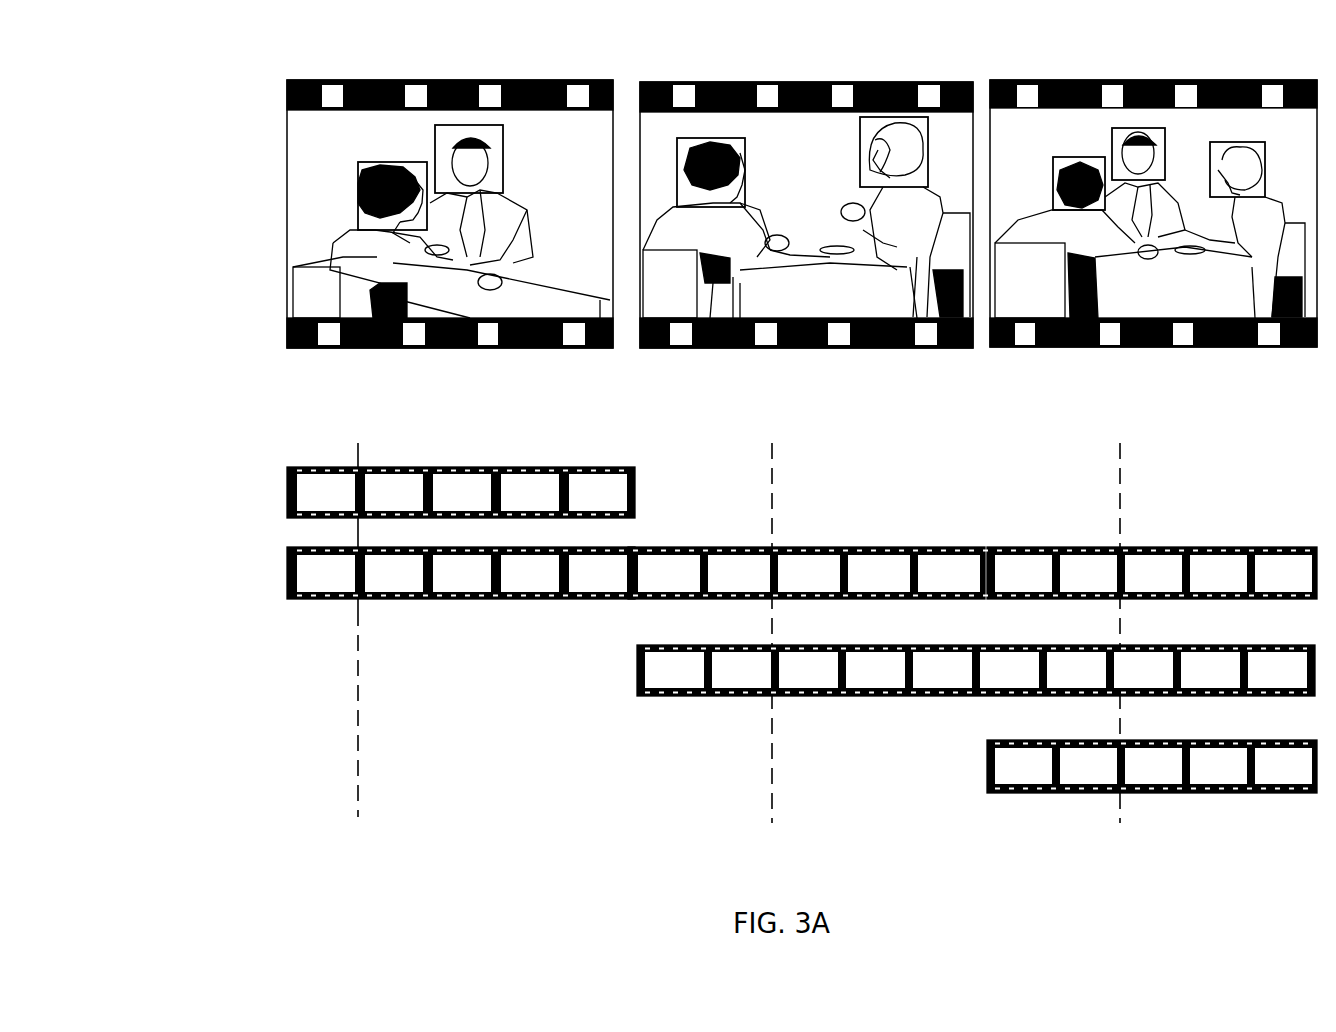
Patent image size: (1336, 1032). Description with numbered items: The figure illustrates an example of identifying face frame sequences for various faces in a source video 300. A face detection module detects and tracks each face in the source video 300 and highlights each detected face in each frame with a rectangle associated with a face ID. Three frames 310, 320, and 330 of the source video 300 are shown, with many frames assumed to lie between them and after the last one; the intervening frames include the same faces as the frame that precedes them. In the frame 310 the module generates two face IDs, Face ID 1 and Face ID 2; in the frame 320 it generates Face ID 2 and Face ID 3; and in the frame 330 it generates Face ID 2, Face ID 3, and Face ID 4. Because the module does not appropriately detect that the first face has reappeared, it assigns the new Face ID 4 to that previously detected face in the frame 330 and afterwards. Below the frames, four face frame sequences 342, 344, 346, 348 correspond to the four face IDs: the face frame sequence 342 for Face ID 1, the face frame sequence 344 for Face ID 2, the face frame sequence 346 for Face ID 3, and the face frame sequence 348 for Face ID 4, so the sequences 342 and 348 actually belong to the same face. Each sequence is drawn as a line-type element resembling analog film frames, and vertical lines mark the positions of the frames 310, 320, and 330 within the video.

The source video 300 is at (925, 46).
The frame 310 is at (450, 465).
The frame 320 is at (806, 472).
The frame 330 is at (1153, 474).
The face frame sequence 342 is at (272, 506).
The face frame sequence 344 is at (272, 589).
The face frame sequence 346 is at (620, 686).
The face frame sequence 348 is at (964, 780).
The Face ID 1 is at (503, 158).
The Face ID 2 is at (358, 188).
The Face ID 3 is at (860, 172).
The Face ID 4 is at (1165, 158).